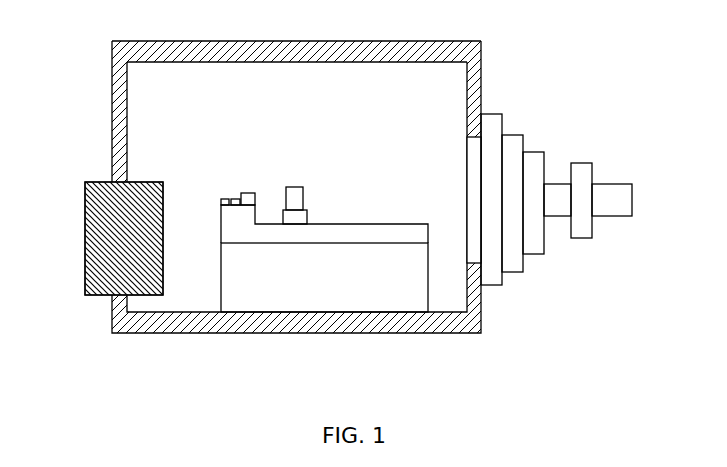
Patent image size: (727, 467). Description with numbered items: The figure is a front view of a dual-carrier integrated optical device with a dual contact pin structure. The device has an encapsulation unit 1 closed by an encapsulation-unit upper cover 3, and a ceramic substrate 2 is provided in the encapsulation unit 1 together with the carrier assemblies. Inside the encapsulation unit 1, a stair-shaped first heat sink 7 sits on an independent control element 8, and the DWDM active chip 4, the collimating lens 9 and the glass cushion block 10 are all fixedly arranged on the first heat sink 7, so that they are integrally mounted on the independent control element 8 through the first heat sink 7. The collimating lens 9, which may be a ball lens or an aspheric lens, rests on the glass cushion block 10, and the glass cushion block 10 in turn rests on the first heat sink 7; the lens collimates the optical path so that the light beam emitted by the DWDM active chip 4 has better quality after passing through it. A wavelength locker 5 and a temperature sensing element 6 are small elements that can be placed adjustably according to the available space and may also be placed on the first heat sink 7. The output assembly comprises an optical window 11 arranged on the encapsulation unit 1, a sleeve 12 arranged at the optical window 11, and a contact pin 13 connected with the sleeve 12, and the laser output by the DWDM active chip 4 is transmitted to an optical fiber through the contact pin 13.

The encapsulation unit 1 is at (148, 327).
The ceramic substrate 2 is at (85, 253).
The upper cover of an encapsulation unit 3 is at (262, 42).
The DWDM active chip 4 is at (253, 193).
The wavelength locker 5 is at (235, 199).
The temperature sensing element 6 is at (220, 200).
The first heat sink 7 is at (221, 234).
The independent control element 8 is at (221, 290).
The collimating lens 9 is at (300, 187).
The glass cushion block 10 is at (307, 215).
The optical window 11 is at (467, 137).
The sleeve 12 is at (525, 150).
The contact pin 13 is at (593, 183).